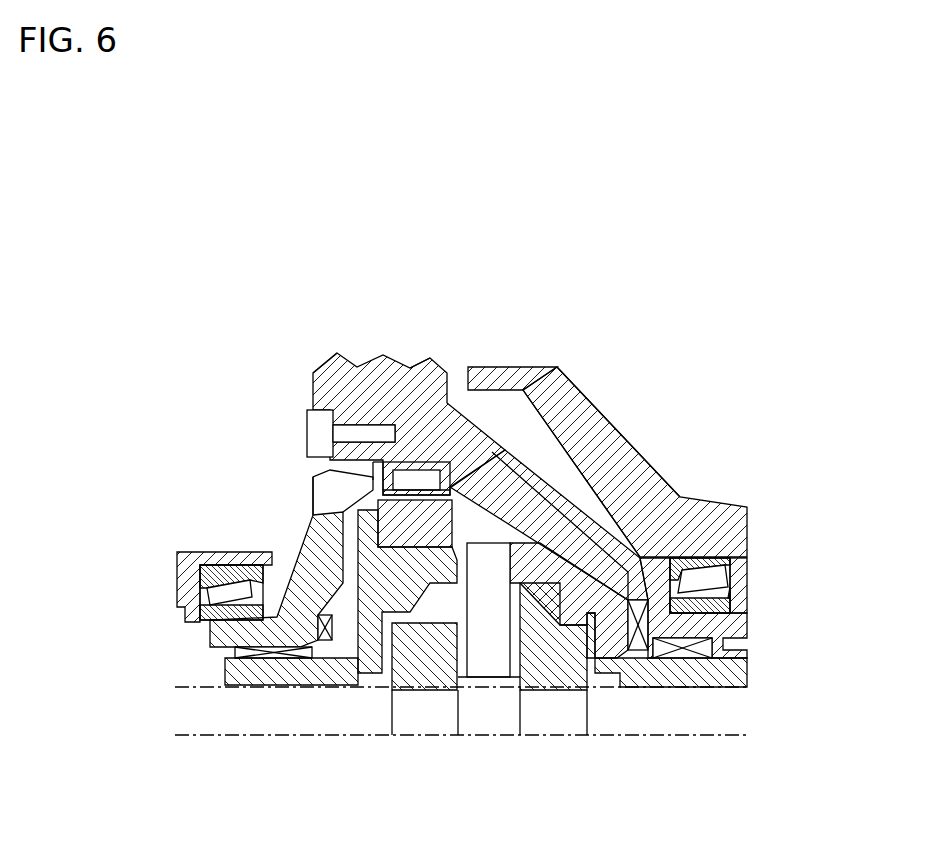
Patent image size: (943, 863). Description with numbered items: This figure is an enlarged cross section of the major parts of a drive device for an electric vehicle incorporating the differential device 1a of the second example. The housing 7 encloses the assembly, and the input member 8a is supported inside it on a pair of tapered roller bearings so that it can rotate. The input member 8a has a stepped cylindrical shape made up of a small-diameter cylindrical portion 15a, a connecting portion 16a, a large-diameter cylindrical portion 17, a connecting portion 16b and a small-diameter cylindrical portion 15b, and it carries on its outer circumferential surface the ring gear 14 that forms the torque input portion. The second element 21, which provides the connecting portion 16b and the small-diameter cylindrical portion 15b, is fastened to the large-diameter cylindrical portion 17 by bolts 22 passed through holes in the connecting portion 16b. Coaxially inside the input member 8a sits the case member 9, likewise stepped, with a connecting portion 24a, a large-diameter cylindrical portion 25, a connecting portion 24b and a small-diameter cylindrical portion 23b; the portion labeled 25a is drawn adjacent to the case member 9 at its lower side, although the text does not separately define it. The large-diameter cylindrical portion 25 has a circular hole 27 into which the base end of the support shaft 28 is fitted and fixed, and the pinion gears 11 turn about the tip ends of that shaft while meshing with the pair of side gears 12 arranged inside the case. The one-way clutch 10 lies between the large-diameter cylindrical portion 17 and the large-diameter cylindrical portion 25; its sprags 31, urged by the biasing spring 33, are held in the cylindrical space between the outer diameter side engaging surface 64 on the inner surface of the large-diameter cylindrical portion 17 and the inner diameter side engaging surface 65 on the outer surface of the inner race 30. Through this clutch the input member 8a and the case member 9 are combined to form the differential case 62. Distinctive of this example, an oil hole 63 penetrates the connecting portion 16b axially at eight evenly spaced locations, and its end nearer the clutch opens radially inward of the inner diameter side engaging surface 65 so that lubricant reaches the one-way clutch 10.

The differential device 1a is at (687, 301).
The housing 7 is at (635, 462).
The input member 8a is at (244, 373).
The case member 9 is at (461, 759).
The one-way clutch 10 is at (318, 487).
The pinion gears 11 is at (489, 673).
The side gears 12 is at (489, 700).
The ring gear 14 is at (409, 376).
The small-diameter cylindrical portion 15a is at (735, 608).
The small-diameter cylindrical portion 15b is at (185, 599).
The connecting portion 16a is at (618, 432).
The connecting portion 16b is at (276, 573).
The large-diameter cylindrical portion 17 is at (297, 340).
The second element 21 is at (442, 523).
The bolts 22 is at (313, 433).
The small-diameter cylindrical portion 23b is at (267, 714).
The connecting portion 24a is at (667, 697).
The connecting portion 24b is at (291, 720).
The large-diameter cylindrical portion 25 is at (431, 526).
The flange portion 25a is at (633, 668).
The circular hole 27 is at (581, 461).
The support shaft 28 is at (549, 515).
The inner race 30 is at (560, 503).
The sprags 31 is at (415, 319).
The biasing spring 33 is at (503, 367).
The differential case 62 is at (146, 352).
The oil hole 63 is at (266, 480).
The outer diameter side engaging surface 64 is at (421, 397).
The inner diameter side engaging surface 65 is at (411, 407).